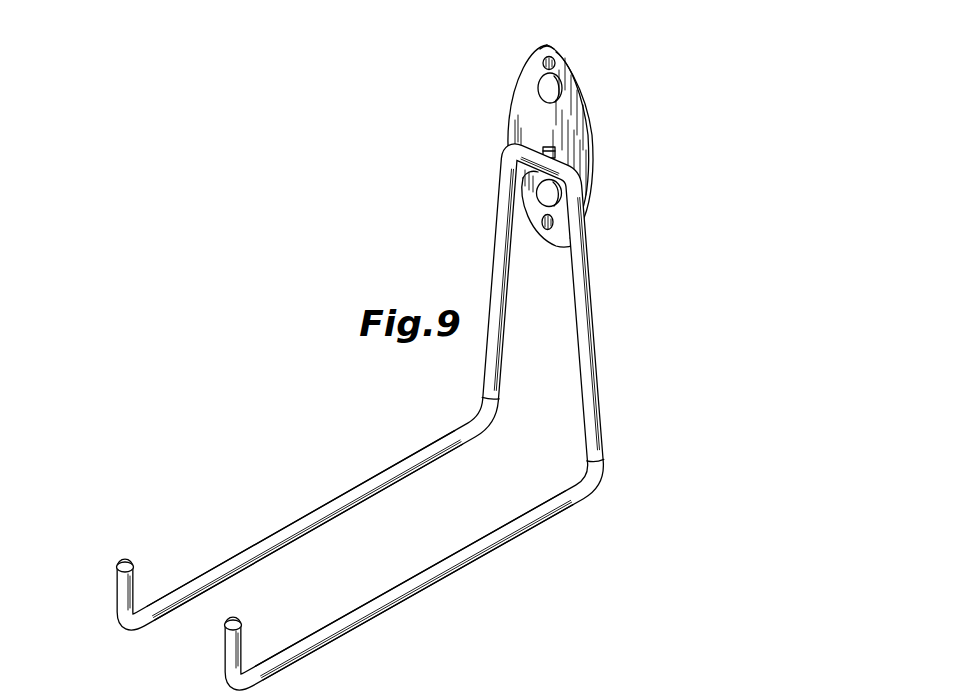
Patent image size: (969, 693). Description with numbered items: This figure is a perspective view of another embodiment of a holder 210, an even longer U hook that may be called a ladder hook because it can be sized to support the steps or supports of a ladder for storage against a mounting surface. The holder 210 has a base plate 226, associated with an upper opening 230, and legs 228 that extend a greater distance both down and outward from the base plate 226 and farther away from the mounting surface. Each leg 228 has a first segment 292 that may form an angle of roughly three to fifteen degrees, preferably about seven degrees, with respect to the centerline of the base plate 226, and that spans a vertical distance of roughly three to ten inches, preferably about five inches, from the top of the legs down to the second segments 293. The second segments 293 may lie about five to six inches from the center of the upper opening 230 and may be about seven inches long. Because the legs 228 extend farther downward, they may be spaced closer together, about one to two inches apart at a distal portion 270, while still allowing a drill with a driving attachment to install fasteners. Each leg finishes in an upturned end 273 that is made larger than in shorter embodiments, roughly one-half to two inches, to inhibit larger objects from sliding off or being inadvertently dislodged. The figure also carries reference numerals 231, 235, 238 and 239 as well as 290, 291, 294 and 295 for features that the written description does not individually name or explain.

The holder 210 is at (602, 96).
The base plate 226 is at (510, 113).
The legs 228 is at (437, 461).
The upper opening 230 is at (539, 89).
The small hole 231 is at (543, 62).
The tab 235 is at (543, 150).
The top end of plate 238 is at (550, 47).
The lower plate 239 is at (565, 243).
The distal portion 270 is at (266, 556).
The upturned end 273 is at (120, 588).
The wire frame 290 is at (600, 390).
The top portion of wire frame 291 is at (560, 167).
The first segment 292 is at (499, 215).
The second segment 293 is at (341, 514).
The bend 294 is at (499, 415).
The arm upper surface 295 is at (394, 463).